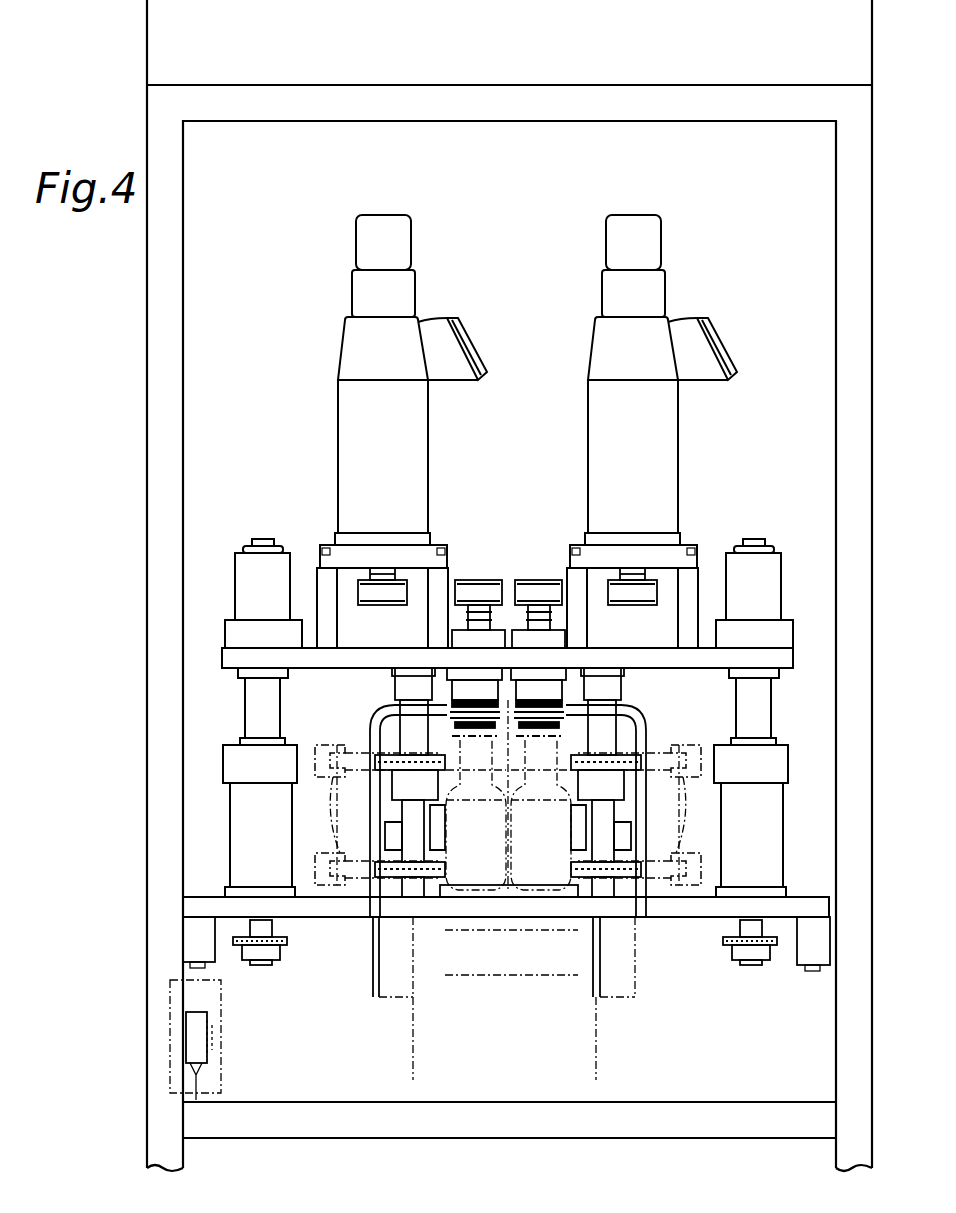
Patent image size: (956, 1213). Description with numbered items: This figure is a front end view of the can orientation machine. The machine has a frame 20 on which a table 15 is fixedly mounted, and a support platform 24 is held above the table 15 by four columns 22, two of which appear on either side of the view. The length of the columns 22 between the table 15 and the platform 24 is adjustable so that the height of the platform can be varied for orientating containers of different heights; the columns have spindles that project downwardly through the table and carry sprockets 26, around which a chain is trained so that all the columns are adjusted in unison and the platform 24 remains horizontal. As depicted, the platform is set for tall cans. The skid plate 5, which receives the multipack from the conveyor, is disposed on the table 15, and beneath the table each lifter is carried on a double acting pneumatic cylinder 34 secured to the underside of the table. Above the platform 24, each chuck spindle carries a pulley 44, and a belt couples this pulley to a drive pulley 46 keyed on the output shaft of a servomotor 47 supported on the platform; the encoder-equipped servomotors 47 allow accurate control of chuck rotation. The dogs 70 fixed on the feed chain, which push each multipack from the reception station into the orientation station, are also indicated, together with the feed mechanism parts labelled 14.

The skid plate 5 is at (490, 890).
The gripper / clamp 14 is at (340, 853).
The table 15 is at (812, 900).
The frame 20 is at (850, 802).
The columns 22 is at (250, 714).
The support platform 24 is at (780, 665).
The sprockets 26 is at (285, 943).
The double acting pneumatic cylinder 34 is at (522, 978).
The pulley 44 is at (540, 585).
The drive pulley 46 is at (383, 600).
The servomotor 47 is at (352, 415).
The dogs 70 is at (326, 747).